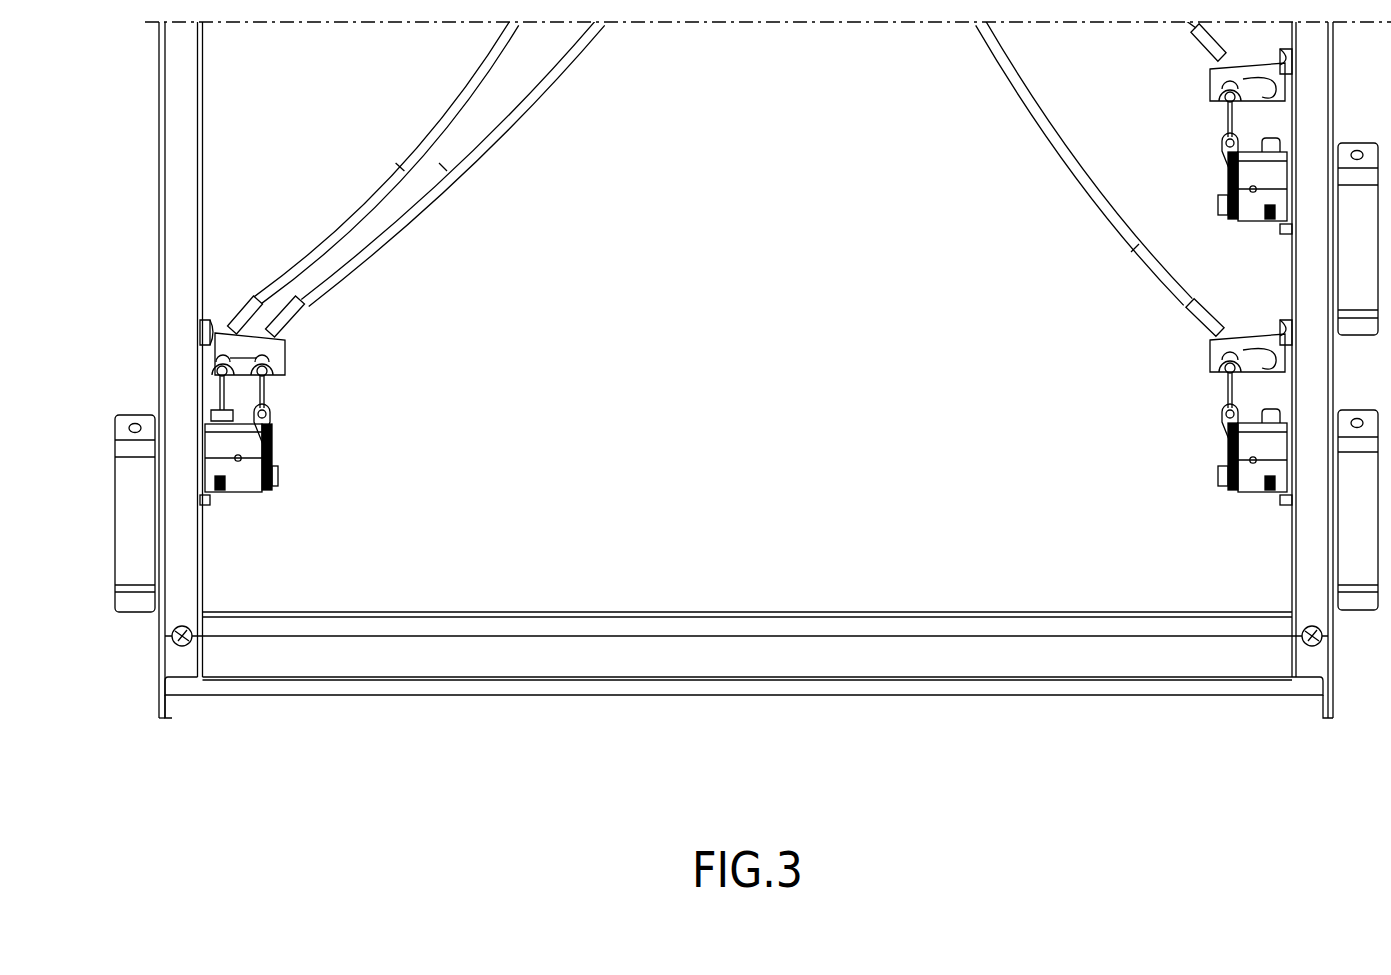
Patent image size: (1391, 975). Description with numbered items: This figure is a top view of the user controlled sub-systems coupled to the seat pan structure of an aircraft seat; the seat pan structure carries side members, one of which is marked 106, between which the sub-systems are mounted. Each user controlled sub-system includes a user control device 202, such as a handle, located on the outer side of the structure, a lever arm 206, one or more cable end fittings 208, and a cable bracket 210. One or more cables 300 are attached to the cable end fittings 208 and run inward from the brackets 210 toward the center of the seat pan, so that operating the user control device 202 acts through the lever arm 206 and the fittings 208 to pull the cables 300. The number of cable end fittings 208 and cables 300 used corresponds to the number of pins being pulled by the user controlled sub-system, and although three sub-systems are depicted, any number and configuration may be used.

The rail 106 is at (182, 103).
The cables 300 is at (317, 277).
The cable bracket 210 is at (215, 335).
The cable end fittings 208 is at (220, 410).
The lever arm 206 is at (222, 457).
The user control device 202 is at (133, 517).